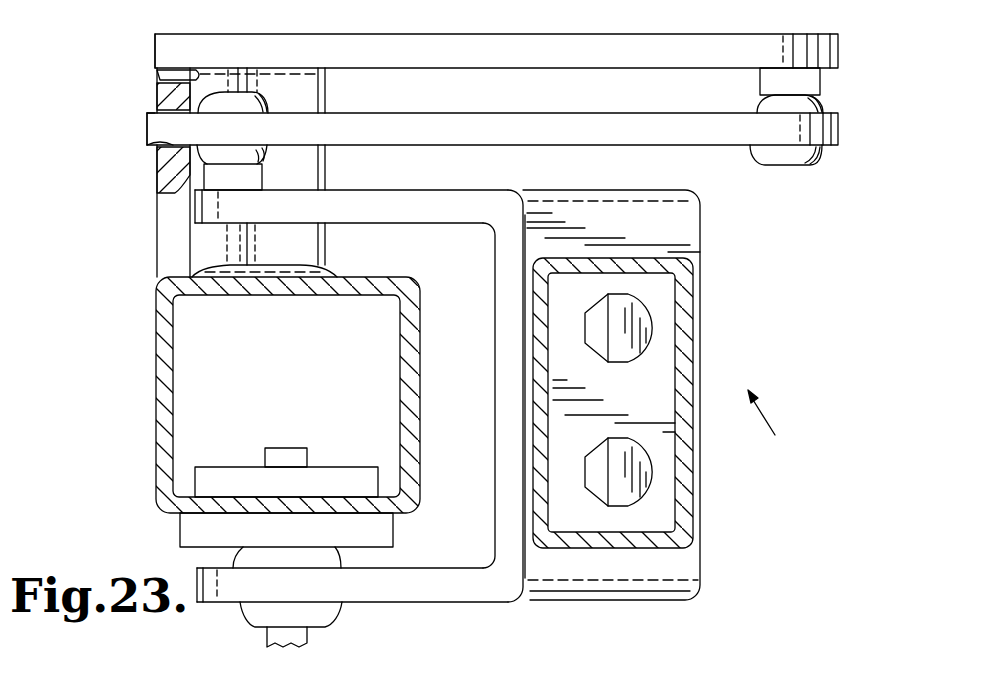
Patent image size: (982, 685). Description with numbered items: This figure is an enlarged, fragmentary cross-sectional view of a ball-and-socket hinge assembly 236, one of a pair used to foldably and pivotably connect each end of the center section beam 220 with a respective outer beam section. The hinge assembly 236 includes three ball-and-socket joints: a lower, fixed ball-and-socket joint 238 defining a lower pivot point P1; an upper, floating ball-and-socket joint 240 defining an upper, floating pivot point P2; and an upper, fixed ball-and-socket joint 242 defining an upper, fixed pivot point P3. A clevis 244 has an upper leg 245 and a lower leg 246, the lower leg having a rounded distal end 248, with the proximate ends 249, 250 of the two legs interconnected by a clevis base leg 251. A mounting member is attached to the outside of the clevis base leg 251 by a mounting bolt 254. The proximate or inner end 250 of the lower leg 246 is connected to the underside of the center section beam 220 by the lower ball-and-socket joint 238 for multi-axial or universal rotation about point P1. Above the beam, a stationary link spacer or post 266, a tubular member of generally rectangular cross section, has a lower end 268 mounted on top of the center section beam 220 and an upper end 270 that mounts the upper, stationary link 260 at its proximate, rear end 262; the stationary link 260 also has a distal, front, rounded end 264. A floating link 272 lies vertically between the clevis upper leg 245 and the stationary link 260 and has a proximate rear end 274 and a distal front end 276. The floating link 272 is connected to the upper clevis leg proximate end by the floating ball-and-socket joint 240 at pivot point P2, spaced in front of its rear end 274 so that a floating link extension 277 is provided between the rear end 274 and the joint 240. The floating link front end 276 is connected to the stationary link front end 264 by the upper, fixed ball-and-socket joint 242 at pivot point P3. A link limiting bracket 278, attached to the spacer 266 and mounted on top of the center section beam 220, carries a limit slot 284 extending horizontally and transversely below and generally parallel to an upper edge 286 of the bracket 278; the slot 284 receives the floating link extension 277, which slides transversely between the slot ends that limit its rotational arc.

The center section beam 220 is at (157, 505).
The ball-and-socket hinge assembly 236 is at (778, 424).
The lower fixed ball-and-socket joint 238 is at (330, 625).
The upper floating ball-and-socket joint 240 is at (283, 155).
The upper fixed ball-and-socket joint 242 is at (765, 166).
The clevis 244 is at (686, 190).
The upper leg 245 is at (402, 190).
The lower leg 246 is at (402, 568).
The rounded distal end 248 is at (196, 585).
The proximate end 249 is at (591, 190).
The proximate end 250 is at (626, 582).
The clevis base leg 251 is at (645, 230).
The mounting bolt 254 is at (648, 354).
The upper stationary link 260 is at (451, 60).
The proximate rear end 262 is at (156, 38).
The distal rounded end 264 is at (840, 18).
The stationary link spacer post 266 is at (318, 244).
The lower end 268 is at (265, 296).
The upper end 270 is at (292, 69).
The floating link 272 is at (451, 140).
The proximate rear end 274 is at (147, 128).
The distal front end 276 is at (838, 148).
The floating link extension 277 is at (208, 138).
The link limiting bracket 278 is at (157, 243).
The limit slot 284 is at (150, 145).
The upper edge 286 is at (157, 72).
The lower pivot point P1 is at (284, 567).
The upper floating pivot point P2 is at (236, 112).
The upper fixed pivot point P3 is at (789, 113).